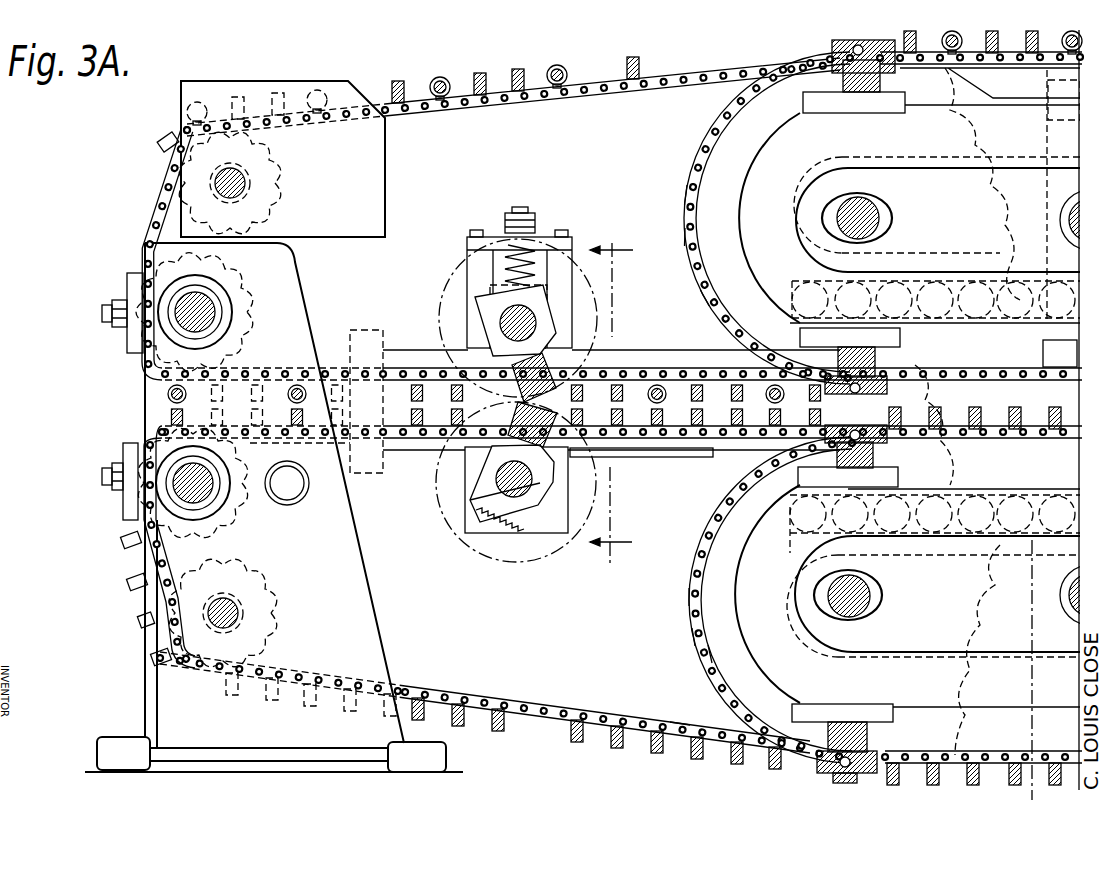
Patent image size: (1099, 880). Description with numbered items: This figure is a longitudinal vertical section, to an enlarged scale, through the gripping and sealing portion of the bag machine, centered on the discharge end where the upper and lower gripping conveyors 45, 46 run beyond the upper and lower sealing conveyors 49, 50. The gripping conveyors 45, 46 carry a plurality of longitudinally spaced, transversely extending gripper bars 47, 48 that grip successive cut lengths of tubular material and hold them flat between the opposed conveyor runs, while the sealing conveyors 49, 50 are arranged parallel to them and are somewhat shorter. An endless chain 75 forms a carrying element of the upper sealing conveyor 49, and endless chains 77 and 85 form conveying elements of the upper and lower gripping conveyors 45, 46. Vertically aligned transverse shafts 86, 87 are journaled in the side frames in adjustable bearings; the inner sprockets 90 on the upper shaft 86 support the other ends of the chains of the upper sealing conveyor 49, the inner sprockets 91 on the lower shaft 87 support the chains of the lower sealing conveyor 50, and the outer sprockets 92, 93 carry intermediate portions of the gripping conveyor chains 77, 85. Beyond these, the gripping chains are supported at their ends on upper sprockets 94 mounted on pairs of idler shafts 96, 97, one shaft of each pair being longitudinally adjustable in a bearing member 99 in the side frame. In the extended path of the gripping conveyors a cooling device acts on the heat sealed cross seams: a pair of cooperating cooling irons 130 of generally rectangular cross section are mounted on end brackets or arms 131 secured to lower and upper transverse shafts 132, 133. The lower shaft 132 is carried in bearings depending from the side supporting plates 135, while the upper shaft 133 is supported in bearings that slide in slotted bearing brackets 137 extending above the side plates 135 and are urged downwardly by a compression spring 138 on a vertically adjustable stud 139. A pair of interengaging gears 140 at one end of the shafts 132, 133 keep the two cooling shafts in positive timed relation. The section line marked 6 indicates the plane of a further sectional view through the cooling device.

The section line 6- 6 is at (611, 398).
The upper endless gripping conveyor 45 is at (557, 99).
The lower endless gripping conveyor 46 is at (500, 692).
The gripper bars 47 is at (720, 370).
The gripper bars 48 is at (587, 438).
The upper endless sealing conveyor 49 is at (712, 150).
The lower endless sealing conveyor 50 is at (699, 540).
The endless chain 75 is at (692, 193).
The endless chain 77 is at (717, 73).
The endless chain 85 is at (693, 637).
The upper transverse shaft 86 is at (876, 218).
The lower transverse shaft 87 is at (872, 590).
The inner sprockets 90 is at (696, 237).
The inner sprockets 91 is at (696, 597).
The outer sprockets 92 is at (716, 298).
The outer sprockets 93 is at (708, 654).
The upper sprockets 94 is at (288, 194).
The upper idler shafts 96 is at (247, 178).
The lower idler shafts 97 is at (232, 503).
The bearing member 99 is at (243, 528).
The cooling irons 130 is at (556, 390).
The end brackets or arms 131 is at (540, 306).
The lower transverse shaft 132 is at (497, 480).
The upper transverse shaft 133 is at (506, 322).
The side supporting plates 135 is at (667, 368).
The slotted bearing brackets 137 is at (474, 250).
The compression spring 138 is at (530, 253).
The vertically adjustable stud 139 is at (521, 207).
The interengaging gears 140 is at (440, 333).